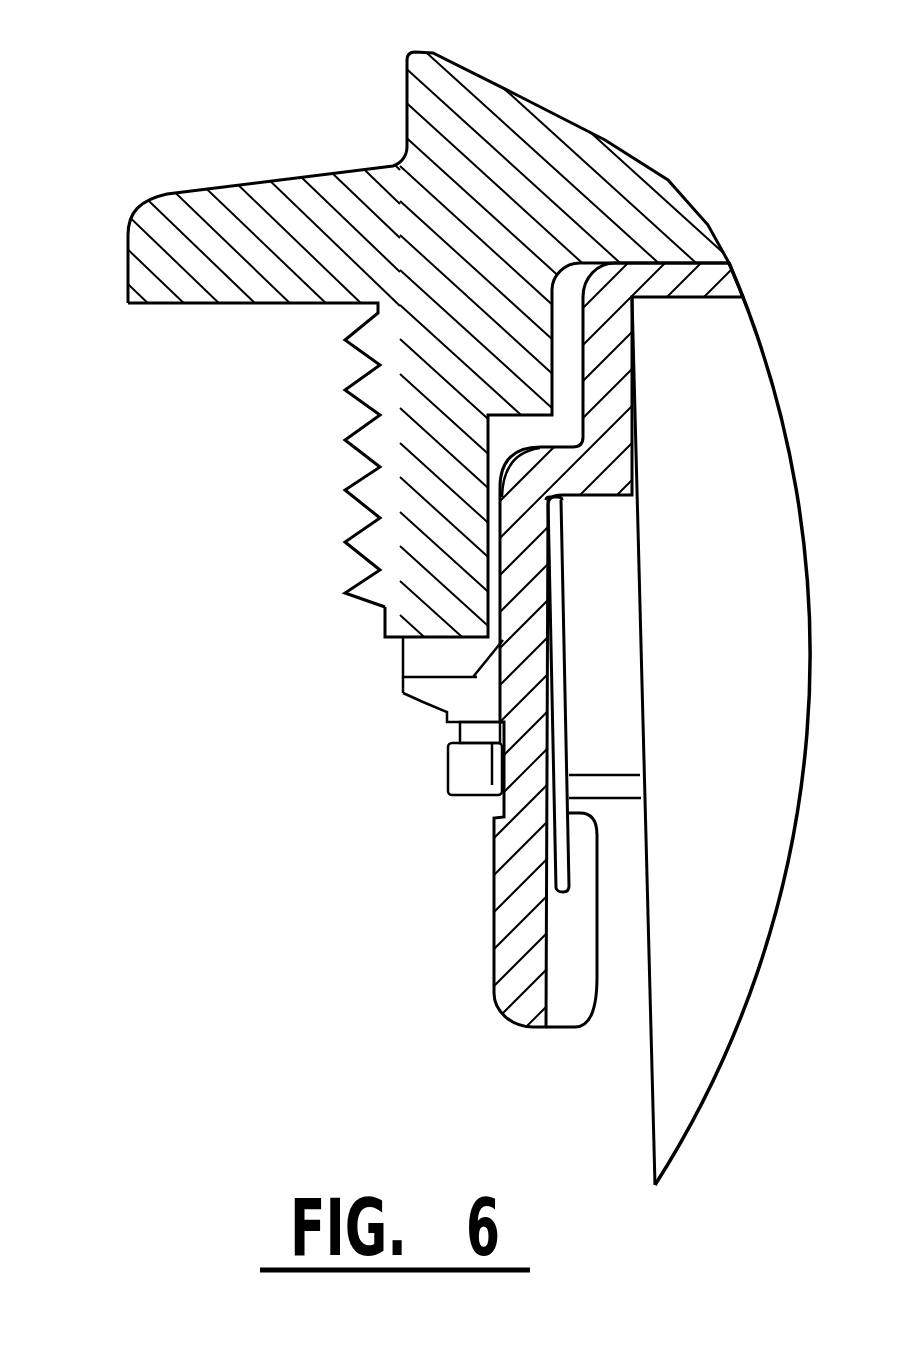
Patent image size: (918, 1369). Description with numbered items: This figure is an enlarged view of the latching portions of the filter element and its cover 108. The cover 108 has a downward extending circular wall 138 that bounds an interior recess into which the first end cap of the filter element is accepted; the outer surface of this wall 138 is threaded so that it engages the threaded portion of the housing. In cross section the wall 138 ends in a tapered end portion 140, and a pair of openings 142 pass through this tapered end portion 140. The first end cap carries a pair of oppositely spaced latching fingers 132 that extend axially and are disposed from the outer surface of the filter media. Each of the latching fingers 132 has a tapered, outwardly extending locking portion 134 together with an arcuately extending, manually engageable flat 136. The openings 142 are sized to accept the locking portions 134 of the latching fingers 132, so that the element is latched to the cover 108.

The cover 108 is at (343, 198).
The latching fingers 132 is at (380, 974).
The locking portions 134 is at (480, 702).
The manually engageable flats 136 is at (494, 900).
The circular wall 138 is at (432, 553).
The tapered end portion 140 is at (446, 767).
The openings 142 is at (432, 653).